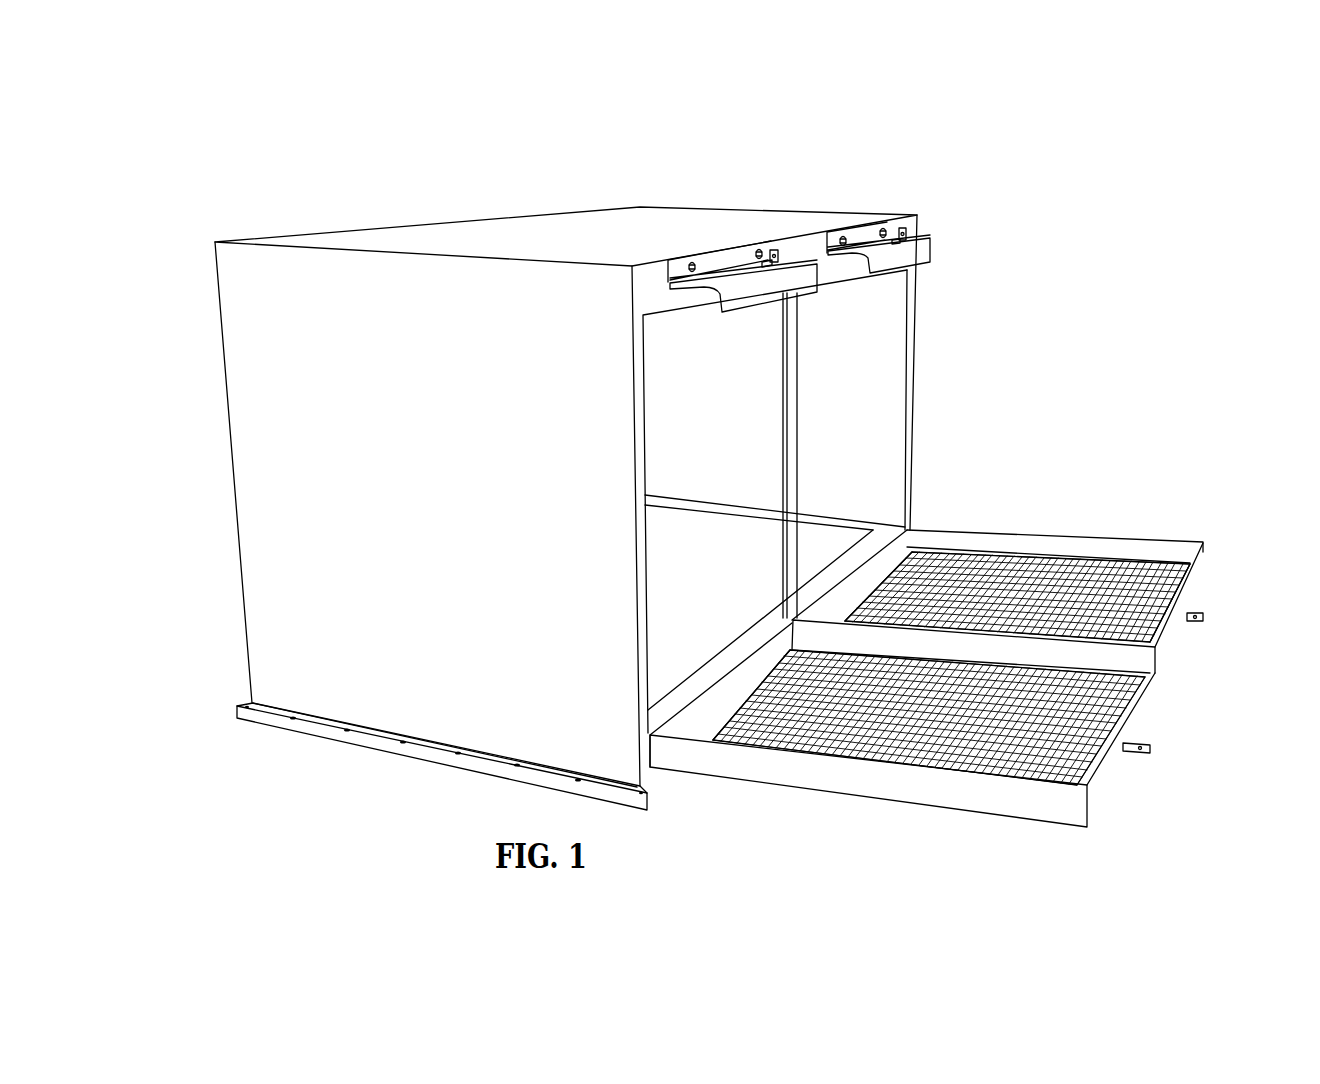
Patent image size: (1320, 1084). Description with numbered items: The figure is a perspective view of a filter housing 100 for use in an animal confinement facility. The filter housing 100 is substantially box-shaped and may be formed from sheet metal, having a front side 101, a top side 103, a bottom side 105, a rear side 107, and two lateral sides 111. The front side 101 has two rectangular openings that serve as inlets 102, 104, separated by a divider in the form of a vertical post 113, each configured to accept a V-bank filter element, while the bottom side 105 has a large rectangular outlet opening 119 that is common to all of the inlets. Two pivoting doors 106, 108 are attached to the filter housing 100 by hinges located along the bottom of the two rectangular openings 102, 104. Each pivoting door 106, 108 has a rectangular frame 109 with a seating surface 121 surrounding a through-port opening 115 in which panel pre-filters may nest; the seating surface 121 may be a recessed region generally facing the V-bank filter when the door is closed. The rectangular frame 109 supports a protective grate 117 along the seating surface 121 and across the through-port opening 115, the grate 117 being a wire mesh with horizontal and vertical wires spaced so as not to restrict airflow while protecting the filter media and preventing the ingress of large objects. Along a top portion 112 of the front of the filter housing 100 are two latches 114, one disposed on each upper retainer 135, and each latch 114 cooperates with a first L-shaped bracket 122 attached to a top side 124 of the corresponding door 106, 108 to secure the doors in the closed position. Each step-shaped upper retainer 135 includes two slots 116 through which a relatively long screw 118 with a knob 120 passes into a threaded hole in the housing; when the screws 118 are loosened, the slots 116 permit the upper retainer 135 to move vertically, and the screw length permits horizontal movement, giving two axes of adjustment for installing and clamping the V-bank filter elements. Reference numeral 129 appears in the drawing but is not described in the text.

The filter housing 100 is at (1165, 152).
The front side 101 is at (940, 350).
The rectangular opening (inlet) 102 is at (681, 645).
The top side 103 is at (533, 227).
The rectangular opening (inlet) 104 is at (912, 415).
The bottom side 105 is at (310, 786).
The pivoting door 106 is at (1200, 570).
The rear side 107 is at (192, 412).
The pivoting door 108 is at (1093, 792).
The rectangular frame 109 is at (1160, 547).
The lateral side 111 is at (280, 560).
The top portion 112 is at (633, 268).
The vertical post 113 is at (795, 333).
The latch 114 is at (773, 258).
The through-port opening 115 is at (1197, 668).
The slot 116 is at (692, 268).
The protective grate 117 is at (857, 760).
The screw 118 is at (757, 252).
The outlet opening 119 is at (742, 553).
The knob 120 is at (760, 257).
The seating surface 121 is at (910, 550).
The first L-shaped bracket 122 is at (1203, 617).
The top side of pivoting door 124 is at (1162, 647).
The base plate 129 is at (270, 728).
The upper retainer 135 is at (928, 258).